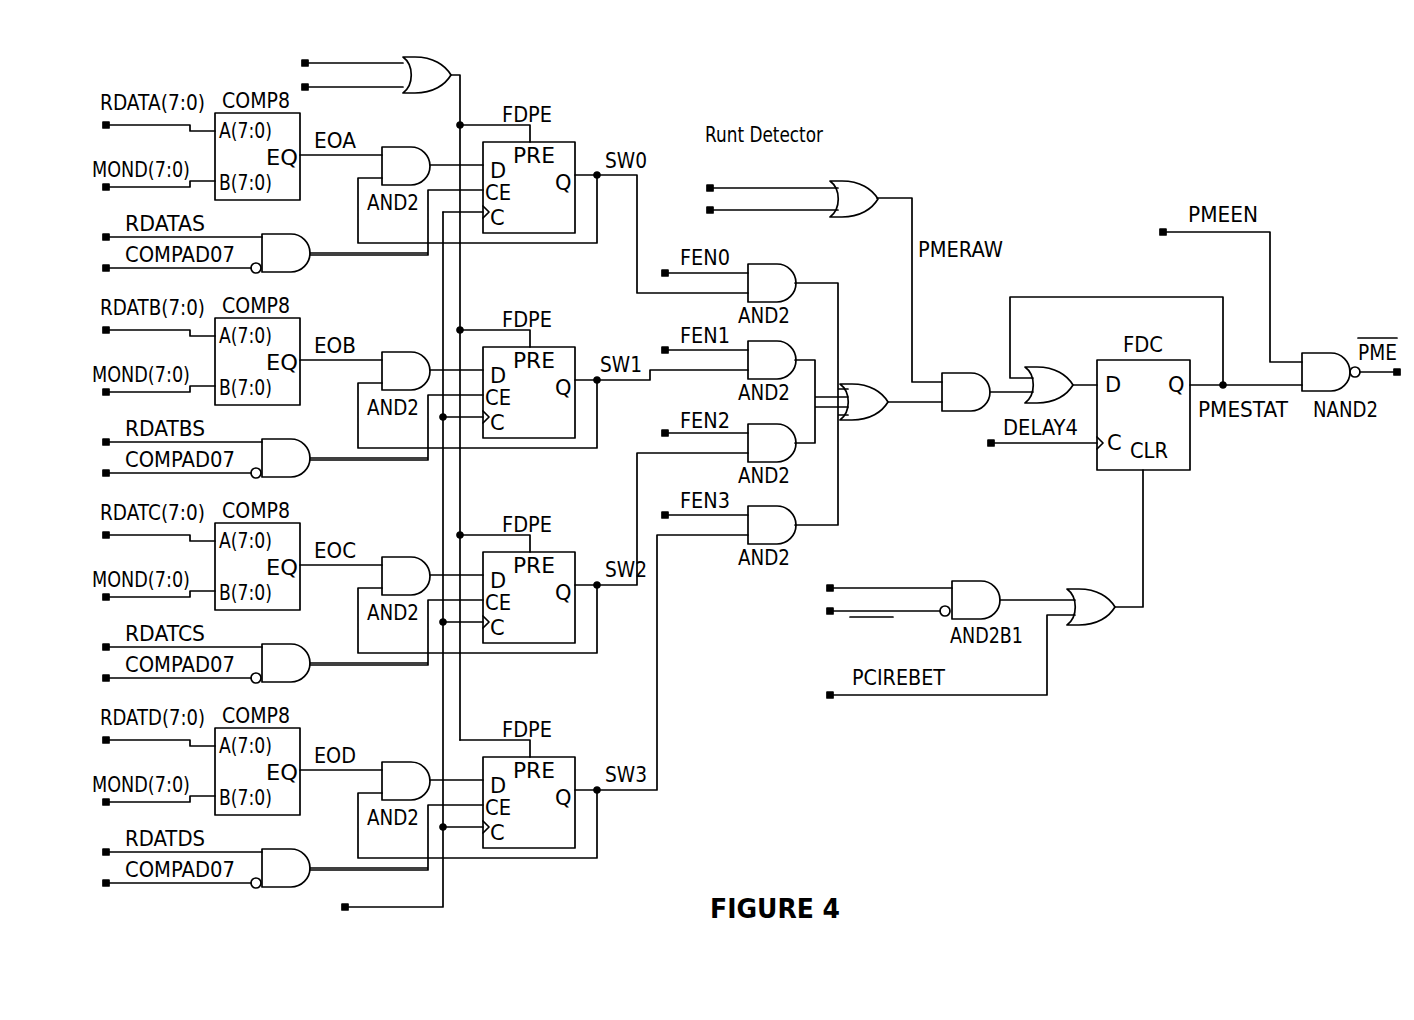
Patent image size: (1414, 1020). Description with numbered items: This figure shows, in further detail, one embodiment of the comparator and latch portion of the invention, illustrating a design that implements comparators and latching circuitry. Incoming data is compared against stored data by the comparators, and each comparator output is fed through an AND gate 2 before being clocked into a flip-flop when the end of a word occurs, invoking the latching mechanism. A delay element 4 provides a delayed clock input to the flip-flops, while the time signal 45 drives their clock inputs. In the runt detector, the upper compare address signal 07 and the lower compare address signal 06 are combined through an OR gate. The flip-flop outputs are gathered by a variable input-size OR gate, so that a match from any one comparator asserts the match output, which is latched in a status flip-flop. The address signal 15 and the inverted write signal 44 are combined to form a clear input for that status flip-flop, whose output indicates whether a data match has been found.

The DELAY4 delay element 4 is at (382, 389).
The TIME 45 timing signal 45 is at (394, 561).
The COMPAD07 signal 07 is at (772, 176).
The COMPAD06 signal 06 is at (772, 223).
The AND2 gate 2 is at (975, 407).
The AD15 signal 15 is at (889, 574).
The W44 signal 44 is at (888, 624).